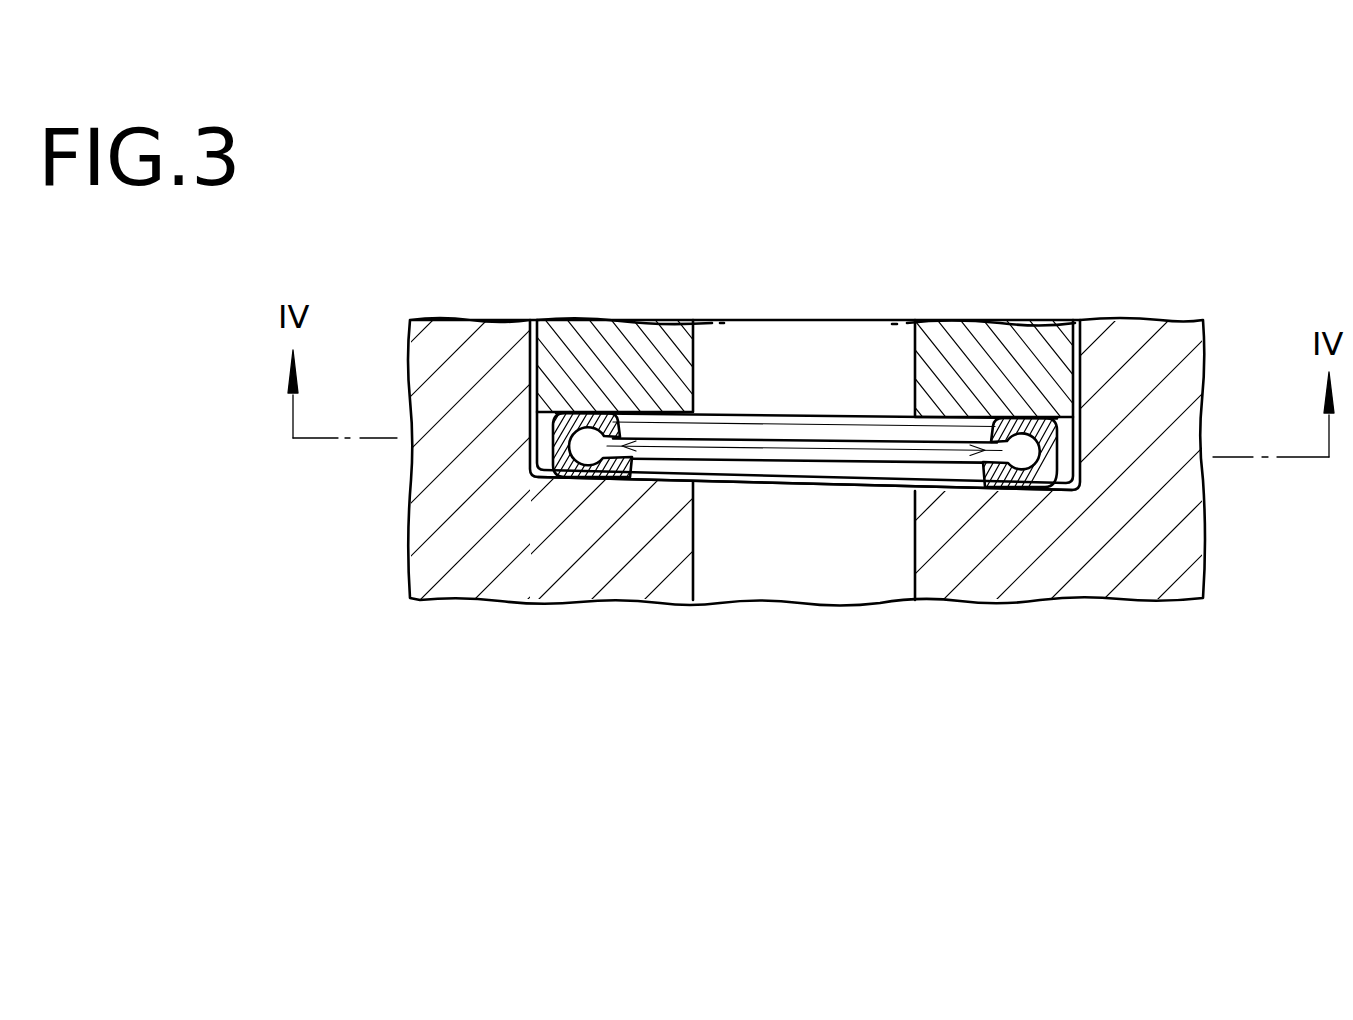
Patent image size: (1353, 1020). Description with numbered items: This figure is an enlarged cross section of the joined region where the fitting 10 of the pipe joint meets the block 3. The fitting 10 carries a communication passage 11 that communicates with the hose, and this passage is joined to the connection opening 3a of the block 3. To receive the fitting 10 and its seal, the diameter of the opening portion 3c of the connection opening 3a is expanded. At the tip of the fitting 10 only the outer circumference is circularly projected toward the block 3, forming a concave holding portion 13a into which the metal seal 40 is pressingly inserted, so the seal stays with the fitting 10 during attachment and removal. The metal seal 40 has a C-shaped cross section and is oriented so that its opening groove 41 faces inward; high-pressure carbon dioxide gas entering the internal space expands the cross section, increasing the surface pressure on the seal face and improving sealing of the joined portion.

The block 3 is at (1123, 598).
The connection opening 3a is at (695, 542).
The opening portion 3c is at (593, 482).
The fitting 10 is at (868, 430).
The communication passage 11 is at (695, 350).
The holding portion 13a is at (1083, 432).
The metal seal 40 is at (793, 521).
The opening groove 41 is at (717, 440).